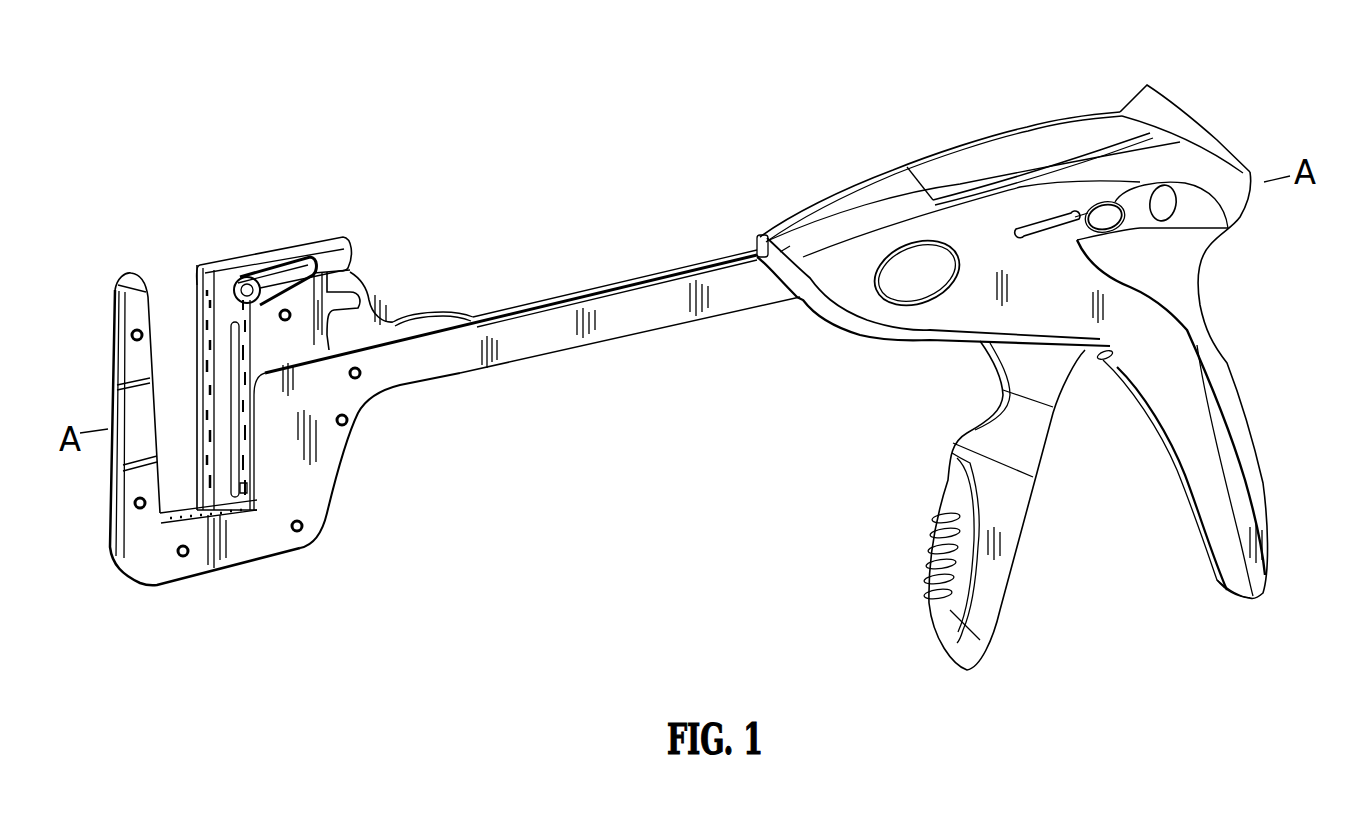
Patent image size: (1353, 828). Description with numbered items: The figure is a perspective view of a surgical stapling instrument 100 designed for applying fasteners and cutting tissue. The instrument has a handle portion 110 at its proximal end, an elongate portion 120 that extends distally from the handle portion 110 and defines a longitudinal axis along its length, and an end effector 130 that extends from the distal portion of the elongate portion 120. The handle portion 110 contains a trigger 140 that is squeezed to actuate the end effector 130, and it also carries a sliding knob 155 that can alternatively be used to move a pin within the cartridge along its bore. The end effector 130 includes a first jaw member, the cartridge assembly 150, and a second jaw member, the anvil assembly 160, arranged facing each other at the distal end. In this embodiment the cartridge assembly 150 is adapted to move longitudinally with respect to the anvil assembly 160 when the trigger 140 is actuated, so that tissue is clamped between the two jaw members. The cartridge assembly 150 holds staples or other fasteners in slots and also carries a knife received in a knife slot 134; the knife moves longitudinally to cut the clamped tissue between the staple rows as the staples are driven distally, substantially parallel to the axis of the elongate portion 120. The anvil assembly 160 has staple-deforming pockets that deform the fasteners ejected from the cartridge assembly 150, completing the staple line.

The surgical stapling instrument 100 is at (679, 110).
The handle portion 110 is at (1052, 85).
The elongate portion 120 is at (615, 268).
The end effector 130 is at (311, 205).
The knife slot 134 is at (200, 326).
The trigger 140 is at (926, 522).
The cartridge assembly 150 is at (216, 251).
The sliding knob 155 is at (1140, 228).
The anvil assembly 160 is at (111, 275).